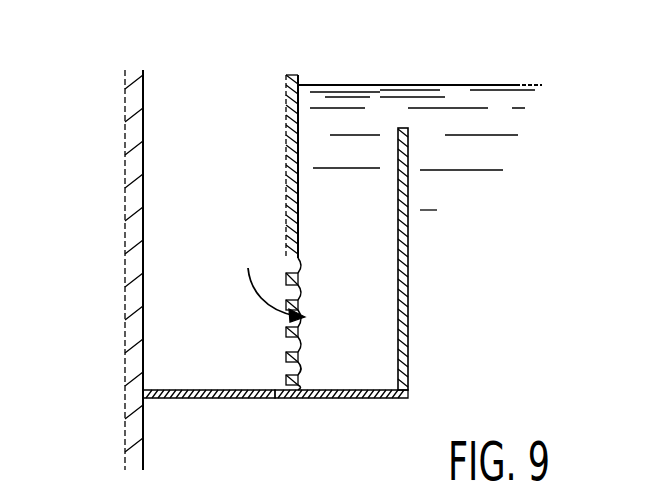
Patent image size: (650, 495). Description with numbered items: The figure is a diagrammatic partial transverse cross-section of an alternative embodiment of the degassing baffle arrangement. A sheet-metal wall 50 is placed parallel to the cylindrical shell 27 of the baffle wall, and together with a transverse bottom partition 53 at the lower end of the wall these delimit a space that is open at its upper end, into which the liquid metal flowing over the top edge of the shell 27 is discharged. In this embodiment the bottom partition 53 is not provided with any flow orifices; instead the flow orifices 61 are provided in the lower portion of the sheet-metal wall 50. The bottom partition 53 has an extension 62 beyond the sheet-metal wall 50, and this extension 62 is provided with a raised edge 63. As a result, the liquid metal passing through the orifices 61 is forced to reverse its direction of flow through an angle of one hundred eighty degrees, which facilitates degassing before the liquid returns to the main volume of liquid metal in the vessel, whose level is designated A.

The cylindrical shell 27 is at (132, 231).
The sheet-metal wall 50 is at (286, 132).
The flow orifices 61 is at (299, 270).
The raised edge 63 is at (408, 268).
The bottom partition 53 is at (203, 400).
The extension 62 is at (338, 400).
The liquid metal level A is at (472, 86).